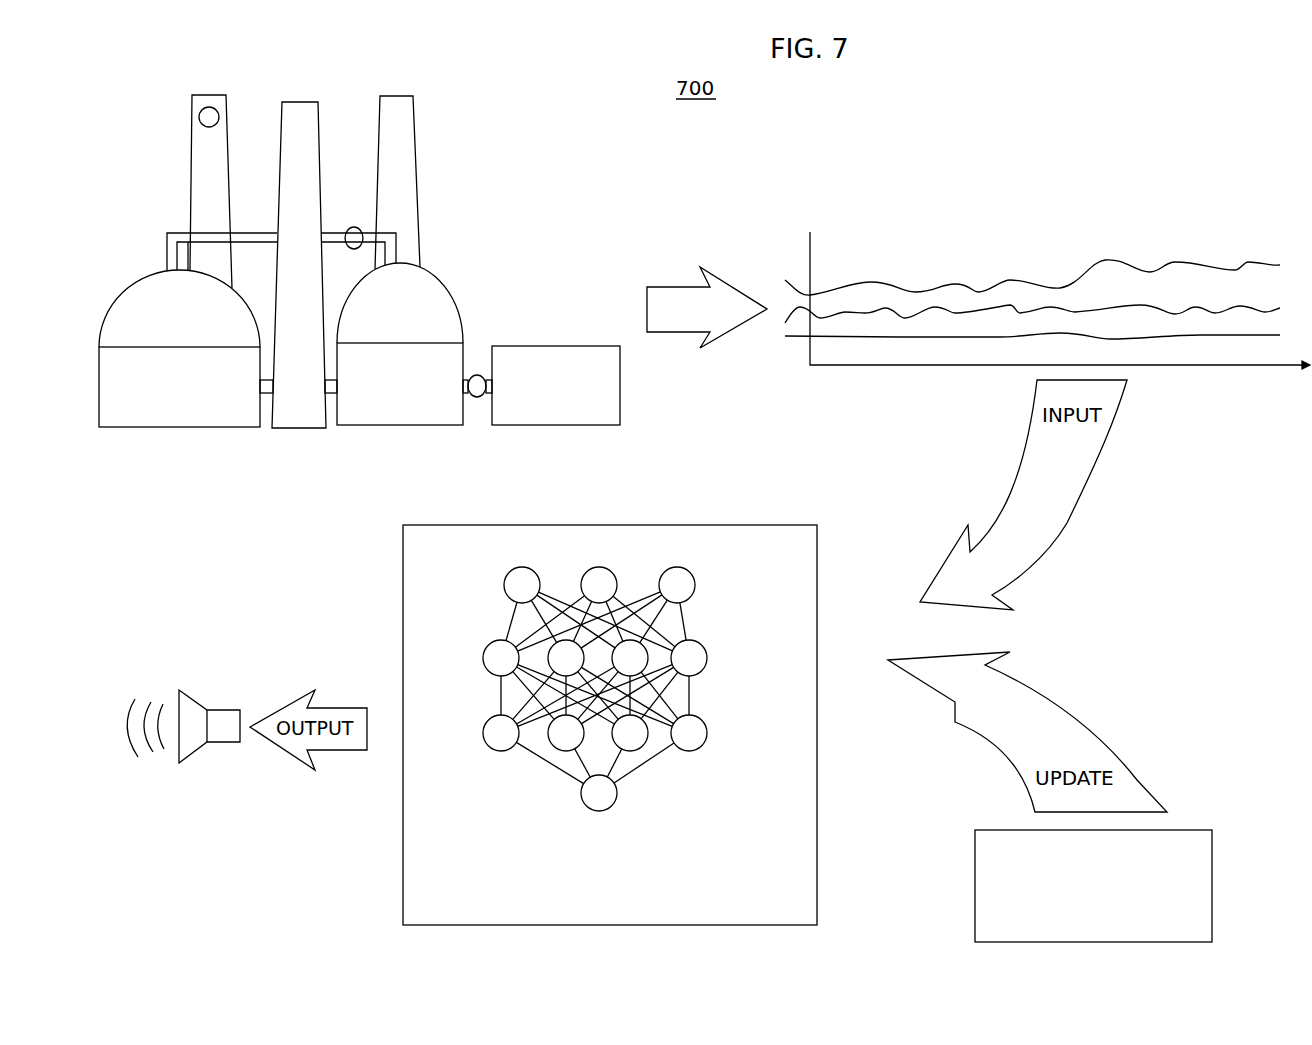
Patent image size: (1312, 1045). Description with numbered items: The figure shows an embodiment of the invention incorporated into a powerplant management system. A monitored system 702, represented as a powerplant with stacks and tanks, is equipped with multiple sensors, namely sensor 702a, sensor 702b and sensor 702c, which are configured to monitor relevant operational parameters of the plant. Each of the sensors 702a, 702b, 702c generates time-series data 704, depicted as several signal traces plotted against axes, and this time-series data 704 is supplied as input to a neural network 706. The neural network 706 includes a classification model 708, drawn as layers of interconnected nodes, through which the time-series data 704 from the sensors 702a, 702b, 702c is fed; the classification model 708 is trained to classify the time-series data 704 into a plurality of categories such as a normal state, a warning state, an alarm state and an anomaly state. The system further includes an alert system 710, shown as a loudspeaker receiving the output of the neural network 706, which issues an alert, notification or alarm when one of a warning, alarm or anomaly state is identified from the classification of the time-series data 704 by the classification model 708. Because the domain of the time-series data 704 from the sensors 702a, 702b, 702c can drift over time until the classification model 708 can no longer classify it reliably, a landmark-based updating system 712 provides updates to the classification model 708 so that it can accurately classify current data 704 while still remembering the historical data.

The monitored system 702 is at (354, 303).
The sensor 702a is at (199, 117).
The sensor 702b is at (354, 227).
The sensor 702c is at (477, 398).
The time-series data 704 is at (997, 247).
The neural network 706 is at (655, 725).
The classification model 708 is at (717, 575).
The alert system 710 is at (172, 765).
The landmark-based updating system 712 is at (975, 866).